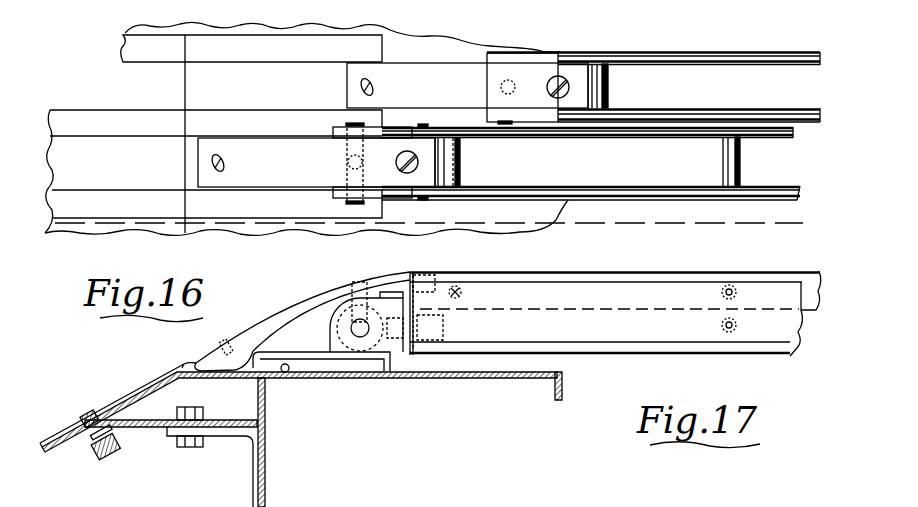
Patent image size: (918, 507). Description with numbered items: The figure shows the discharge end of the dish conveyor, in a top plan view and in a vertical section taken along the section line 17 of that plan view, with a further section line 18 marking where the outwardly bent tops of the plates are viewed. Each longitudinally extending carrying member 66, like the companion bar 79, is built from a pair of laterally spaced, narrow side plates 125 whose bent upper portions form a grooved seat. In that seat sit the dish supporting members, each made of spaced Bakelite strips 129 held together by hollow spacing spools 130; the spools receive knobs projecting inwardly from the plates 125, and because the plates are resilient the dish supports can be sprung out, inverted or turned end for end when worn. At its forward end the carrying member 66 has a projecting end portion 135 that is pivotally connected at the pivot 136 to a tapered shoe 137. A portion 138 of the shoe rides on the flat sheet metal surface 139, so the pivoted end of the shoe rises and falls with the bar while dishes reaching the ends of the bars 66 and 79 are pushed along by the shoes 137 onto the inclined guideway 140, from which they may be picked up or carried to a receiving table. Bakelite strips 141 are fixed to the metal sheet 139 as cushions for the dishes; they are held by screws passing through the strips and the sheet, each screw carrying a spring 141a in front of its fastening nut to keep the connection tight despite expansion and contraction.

In FIG. 16, the section line 17 is at (65, 207).
In FIG. 17, the section line 18 is at (729, 378).
In FIG. 16, the carrying member 66 is at (600, 200).
In FIG. 17, the carrying member 66 is at (498, 332).
In FIG. 16, the bar 79 is at (680, 40).
In FIG. 17, the side plate 125 is at (639, 290).
In FIG. 16, the strip 129 is at (703, 110).
In FIG. 17, the strip 129 is at (567, 273).
In FIG. 16, the spacing spool 130 is at (607, 86).
In FIG. 17, the spacing spool 130 is at (462, 284).
In FIG. 17, the projecting end portion 135 is at (392, 356).
In FIG. 17, the pivot 136 is at (357, 337).
In FIG. 16, the tapered shoe 137 is at (278, 147).
In FIG. 17, the tapered shoe 137 is at (295, 315).
In FIG. 17, the shoe portion 138 is at (240, 356).
In FIG. 17, the sheet metal surface 139 is at (287, 372).
In FIG. 16, the inclined guideway 140 is at (115, 49).
In FIG. 17, the inclined guideway 140 is at (128, 396).
In FIG. 16, the Bakelite strip 141 is at (107, 127).
In FIG. 17, the Bakelite strip 141 is at (182, 343).
In FIG. 17, the spring 141a is at (98, 456).